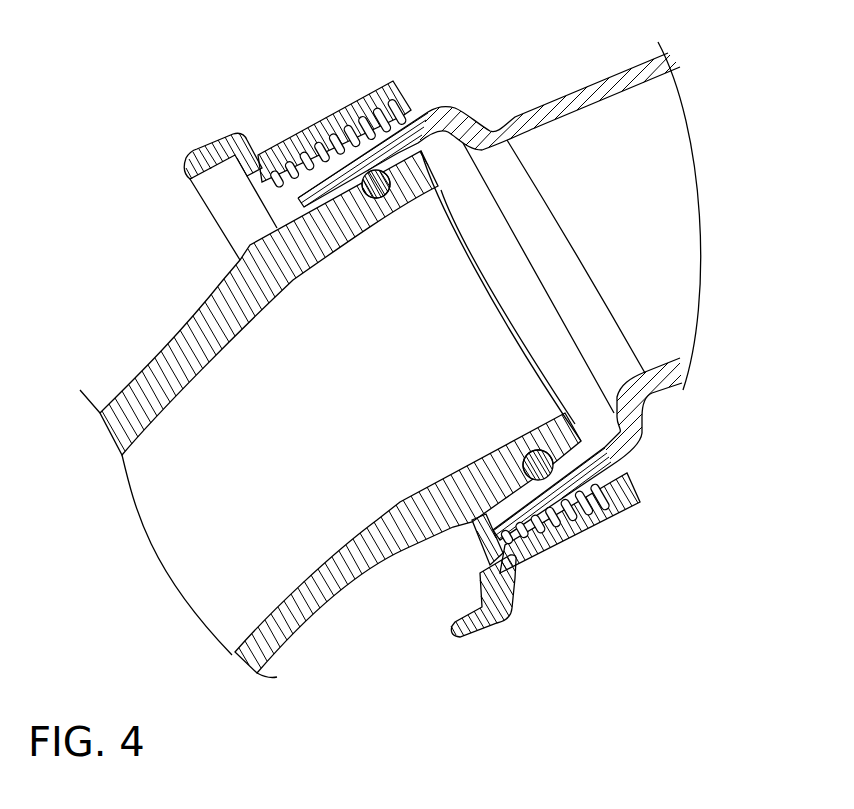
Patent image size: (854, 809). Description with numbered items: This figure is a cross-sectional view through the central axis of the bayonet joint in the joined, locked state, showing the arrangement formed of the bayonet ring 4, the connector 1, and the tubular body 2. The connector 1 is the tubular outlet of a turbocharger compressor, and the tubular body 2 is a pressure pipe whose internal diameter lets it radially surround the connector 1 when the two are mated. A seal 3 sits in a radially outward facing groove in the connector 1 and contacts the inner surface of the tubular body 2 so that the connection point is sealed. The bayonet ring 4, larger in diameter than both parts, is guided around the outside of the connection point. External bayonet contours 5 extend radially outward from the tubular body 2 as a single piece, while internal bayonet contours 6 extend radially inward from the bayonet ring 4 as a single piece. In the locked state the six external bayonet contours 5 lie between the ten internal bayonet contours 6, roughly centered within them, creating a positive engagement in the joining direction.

The connector 1 is at (180, 348).
The tubular body 2 is at (667, 205).
The seal 3 is at (373, 181).
The bayonet ring 4 is at (488, 618).
The external bayonet contours 5 is at (587, 500).
The internal bayonet contours 6 is at (494, 556).